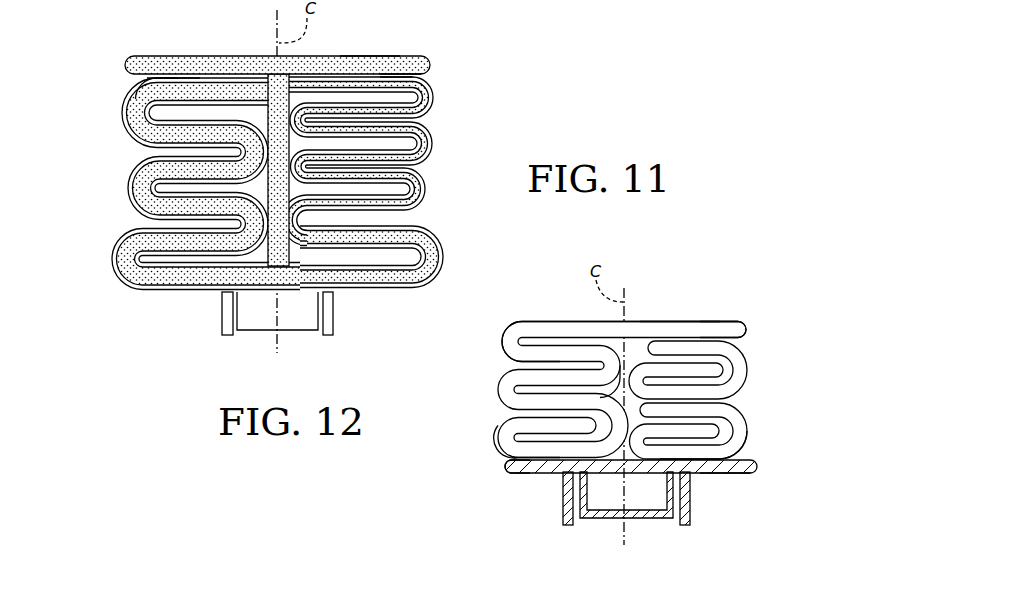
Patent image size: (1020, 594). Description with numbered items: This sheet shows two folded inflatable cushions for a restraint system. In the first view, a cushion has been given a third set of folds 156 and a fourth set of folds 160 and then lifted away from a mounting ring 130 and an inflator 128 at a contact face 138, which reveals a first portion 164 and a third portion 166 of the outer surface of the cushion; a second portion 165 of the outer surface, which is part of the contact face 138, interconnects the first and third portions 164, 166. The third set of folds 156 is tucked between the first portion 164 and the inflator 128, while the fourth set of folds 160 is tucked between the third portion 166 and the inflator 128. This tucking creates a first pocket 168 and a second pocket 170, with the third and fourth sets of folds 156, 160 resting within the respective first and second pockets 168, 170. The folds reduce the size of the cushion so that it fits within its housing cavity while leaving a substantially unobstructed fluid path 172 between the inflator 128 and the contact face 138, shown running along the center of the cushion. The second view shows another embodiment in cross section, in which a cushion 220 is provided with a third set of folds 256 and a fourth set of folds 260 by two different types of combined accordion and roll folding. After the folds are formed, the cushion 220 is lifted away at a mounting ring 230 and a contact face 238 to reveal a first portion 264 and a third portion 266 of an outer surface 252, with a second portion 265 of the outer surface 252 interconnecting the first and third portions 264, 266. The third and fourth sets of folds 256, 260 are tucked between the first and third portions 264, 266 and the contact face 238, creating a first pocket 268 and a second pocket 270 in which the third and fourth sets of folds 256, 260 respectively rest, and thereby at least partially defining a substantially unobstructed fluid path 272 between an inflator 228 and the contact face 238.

In FIG. 12, the contact face 138 is at (207, 58).
In FIG. 12, the third portion 166 is at (150, 78).
In FIG. 12, the second pocket 170 is at (147, 83).
In FIG. 12, the fourth set of folds 160 is at (122, 182).
In FIG. 12, the second portion 165 is at (340, 57).
In FIG. 12, the first portion 164 is at (405, 74).
In FIG. 12, the first pocket 168 is at (410, 80).
In FIG. 12, the third set of folds 156 is at (437, 180).
In FIG. 12, the fluid path 172 is at (282, 226).
In FIG. 12, the mounting ring 130 is at (333, 309).
In FIG. 12, the inflator 128 is at (257, 331).
In FIG. 11, the outer surface 252 is at (537, 322).
In FIG. 11, the fluid path 272 is at (637, 370).
In FIG. 11, the cushion 220 is at (683, 320).
In FIG. 11, the contact face 238 is at (723, 318).
In FIG. 11, the fourth set of folds 260 is at (475, 400).
In FIG. 11, the third set of folds 256 is at (777, 397).
In FIG. 11, the second pocket 270 is at (508, 452).
In FIG. 11, the third portion 266 is at (503, 458).
In FIG. 11, the first pocket 268 is at (743, 441).
In FIG. 11, the first portion 264 is at (745, 452).
In FIG. 11, the second portion 265 is at (723, 476).
In FIG. 11, the mounting ring 230 is at (693, 500).
In FIG. 11, the inflator 228 is at (647, 511).